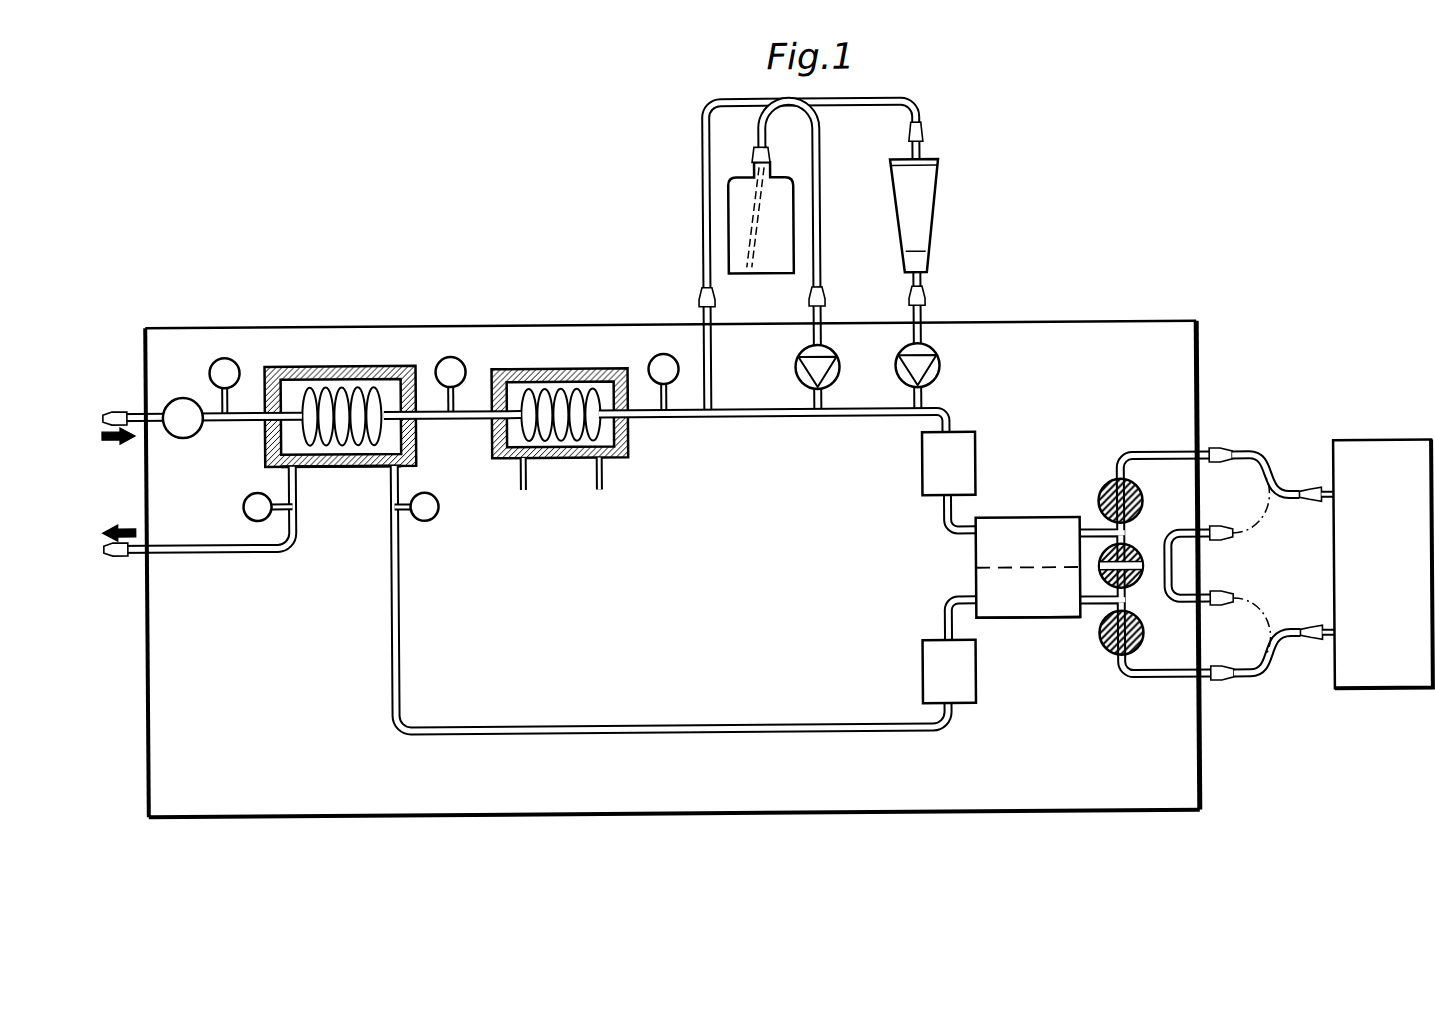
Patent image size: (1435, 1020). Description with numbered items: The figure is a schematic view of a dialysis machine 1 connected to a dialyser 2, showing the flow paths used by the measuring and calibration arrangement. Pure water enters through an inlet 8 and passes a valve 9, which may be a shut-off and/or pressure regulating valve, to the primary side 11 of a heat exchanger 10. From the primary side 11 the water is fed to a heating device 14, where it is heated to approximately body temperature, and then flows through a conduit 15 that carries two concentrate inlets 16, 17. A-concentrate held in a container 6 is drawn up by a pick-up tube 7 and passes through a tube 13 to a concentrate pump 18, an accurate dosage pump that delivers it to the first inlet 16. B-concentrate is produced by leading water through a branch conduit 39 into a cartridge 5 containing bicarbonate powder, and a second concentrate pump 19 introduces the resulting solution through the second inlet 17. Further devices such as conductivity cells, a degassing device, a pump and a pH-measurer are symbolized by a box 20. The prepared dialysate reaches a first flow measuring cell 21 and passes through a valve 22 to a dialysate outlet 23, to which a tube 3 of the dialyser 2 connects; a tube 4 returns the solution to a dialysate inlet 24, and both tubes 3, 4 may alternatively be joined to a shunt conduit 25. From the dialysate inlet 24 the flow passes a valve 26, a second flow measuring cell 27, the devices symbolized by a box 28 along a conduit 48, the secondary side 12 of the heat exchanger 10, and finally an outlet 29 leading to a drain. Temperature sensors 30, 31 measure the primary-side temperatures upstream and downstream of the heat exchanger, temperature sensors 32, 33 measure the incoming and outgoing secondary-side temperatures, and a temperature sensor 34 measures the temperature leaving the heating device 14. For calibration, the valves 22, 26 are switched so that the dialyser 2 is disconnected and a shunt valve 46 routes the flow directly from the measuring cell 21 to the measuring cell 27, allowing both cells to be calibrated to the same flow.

The dialysis machine 1 is at (445, 325).
The dialyser 2 is at (1390, 440).
The tube 3 is at (1284, 490).
The tube 4 is at (1278, 650).
The cartridge 5 is at (931, 222).
The container 6 is at (742, 190).
The pick-up tube 7 is at (766, 276).
The inlet 8 is at (112, 406).
The valve 9 is at (184, 436).
The heat exchanger 10 is at (312, 364).
The primary side 11 is at (352, 385).
The secondary side 12 is at (350, 465).
The tube 13 is at (823, 220).
The heating device 14 is at (568, 368).
The conduit 15 is at (763, 422).
The first inlet 16 is at (808, 402).
The second inlet 17 is at (932, 397).
The concentrate pump 18 is at (799, 360).
The second concentrate pump 19 is at (938, 372).
The box 20 is at (926, 462).
The first flow measuring cell 21 is at (988, 522).
The valve 22 is at (1099, 502).
The dialysate outlet 23 is at (1218, 452).
The dialysate inlet 24 is at (1220, 684).
The shunt conduit 25 is at (1170, 538).
The valve 26 is at (1099, 636).
The second flow measuring cell 27 is at (998, 620).
The box 28 is at (925, 674).
The outlet 29 is at (118, 554).
The temperature sensor 30 is at (212, 364).
The temperature sensor 31 is at (466, 362).
The temperature sensor 32 is at (439, 505).
The temperature sensor 33 is at (250, 508).
The temperature sensor 34 is at (652, 361).
The conduit 39 is at (703, 218).
The shunt valve 46 is at (1136, 586).
The conduit 48 is at (658, 722).